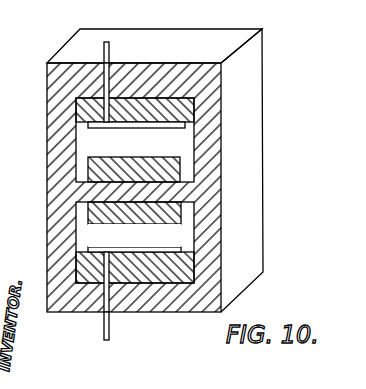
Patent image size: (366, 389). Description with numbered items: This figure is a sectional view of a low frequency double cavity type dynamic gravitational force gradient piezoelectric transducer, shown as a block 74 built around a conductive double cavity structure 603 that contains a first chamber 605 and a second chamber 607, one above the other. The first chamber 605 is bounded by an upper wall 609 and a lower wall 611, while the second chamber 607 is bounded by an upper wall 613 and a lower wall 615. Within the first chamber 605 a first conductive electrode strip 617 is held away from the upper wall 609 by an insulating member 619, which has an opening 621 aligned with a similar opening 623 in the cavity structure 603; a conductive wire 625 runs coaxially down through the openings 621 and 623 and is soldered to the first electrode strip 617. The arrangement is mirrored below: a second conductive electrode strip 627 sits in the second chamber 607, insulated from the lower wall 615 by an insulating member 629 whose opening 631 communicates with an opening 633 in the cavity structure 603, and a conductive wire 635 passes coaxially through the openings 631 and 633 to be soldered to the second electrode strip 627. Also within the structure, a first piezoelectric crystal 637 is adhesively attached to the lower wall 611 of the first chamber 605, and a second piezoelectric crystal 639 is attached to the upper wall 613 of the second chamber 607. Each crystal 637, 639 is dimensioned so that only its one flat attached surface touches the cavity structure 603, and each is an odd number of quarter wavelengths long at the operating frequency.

The housing block 74 is at (241, 80).
The conductive double cavity structure 603 is at (58, 226).
The first chamber 605 is at (85, 139).
The second chamber 607 is at (88, 236).
The upper wall 609 is at (90, 92).
The lower wall 611 is at (80, 178).
The upper wall 613 is at (193, 201).
The lower wall 615 is at (78, 275).
The first conductive electrode strip 617 is at (173, 127).
The insulating member 619 is at (167, 103).
The opening 621 is at (98, 117).
The opening 623 is at (109, 75).
The conductive wire 625 is at (107, 42).
The second conductive electrode strip 627 is at (165, 238).
The insulating member 629 is at (170, 272).
The opening 631 is at (126, 233).
The opening 633 is at (82, 295).
The conductive wire 635 is at (103, 336).
The first piezoelectric crystal 637 is at (160, 170).
The second piezoelectric crystal 639 is at (90, 208).